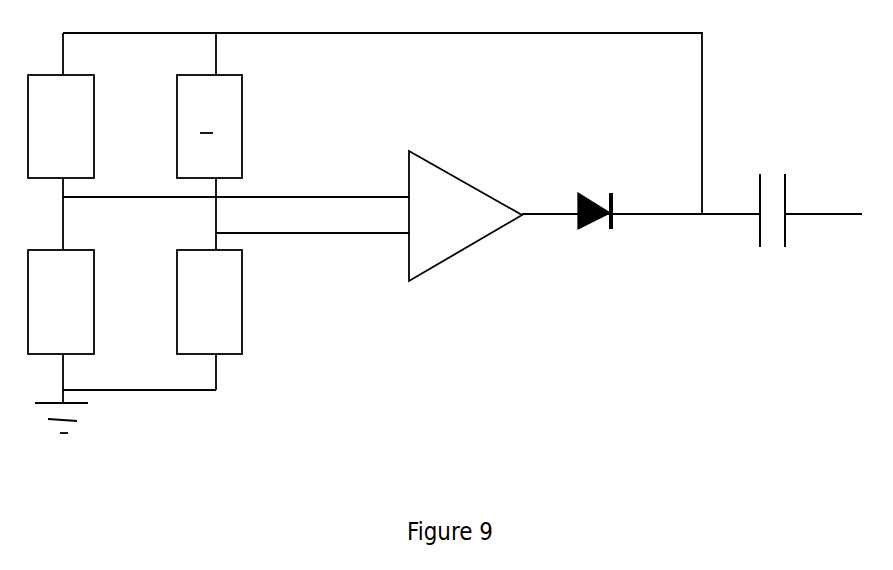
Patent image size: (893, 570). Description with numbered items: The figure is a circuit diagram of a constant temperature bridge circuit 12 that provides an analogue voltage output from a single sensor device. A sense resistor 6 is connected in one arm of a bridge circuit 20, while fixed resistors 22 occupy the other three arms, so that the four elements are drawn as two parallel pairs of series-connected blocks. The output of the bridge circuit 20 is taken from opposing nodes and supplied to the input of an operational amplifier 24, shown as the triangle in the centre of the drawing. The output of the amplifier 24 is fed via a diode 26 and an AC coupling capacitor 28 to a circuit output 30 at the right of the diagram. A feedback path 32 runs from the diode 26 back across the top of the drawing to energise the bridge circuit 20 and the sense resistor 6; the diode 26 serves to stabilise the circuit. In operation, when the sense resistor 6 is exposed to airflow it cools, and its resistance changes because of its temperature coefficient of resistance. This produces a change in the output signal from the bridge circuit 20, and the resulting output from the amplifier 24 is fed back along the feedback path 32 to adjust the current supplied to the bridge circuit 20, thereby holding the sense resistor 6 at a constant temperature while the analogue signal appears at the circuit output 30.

The sense resistor 6 is at (61, 126).
The constant temperature bridge circuit 12 is at (353, 352).
The bridge circuit 20 is at (147, 339).
The fixed resistors 22 is at (135, 214).
The operational amplifier 24 is at (440, 245).
The diode 26 is at (590, 225).
The AC coupling capacitor 28 is at (755, 217).
The circuit output 30 is at (830, 217).
The feedback path 32 is at (522, 44).